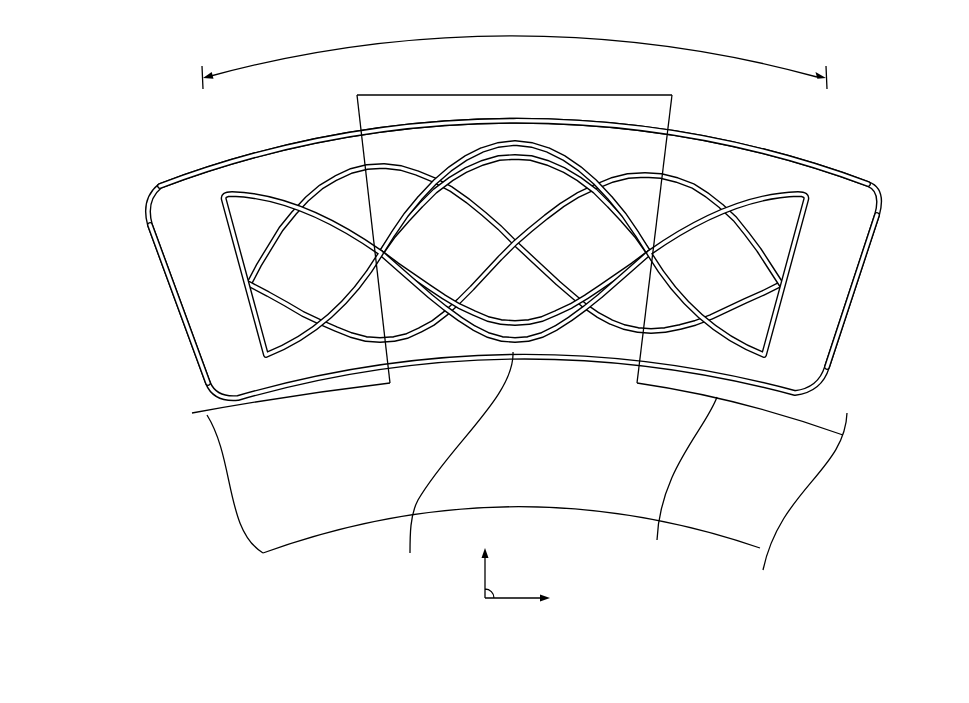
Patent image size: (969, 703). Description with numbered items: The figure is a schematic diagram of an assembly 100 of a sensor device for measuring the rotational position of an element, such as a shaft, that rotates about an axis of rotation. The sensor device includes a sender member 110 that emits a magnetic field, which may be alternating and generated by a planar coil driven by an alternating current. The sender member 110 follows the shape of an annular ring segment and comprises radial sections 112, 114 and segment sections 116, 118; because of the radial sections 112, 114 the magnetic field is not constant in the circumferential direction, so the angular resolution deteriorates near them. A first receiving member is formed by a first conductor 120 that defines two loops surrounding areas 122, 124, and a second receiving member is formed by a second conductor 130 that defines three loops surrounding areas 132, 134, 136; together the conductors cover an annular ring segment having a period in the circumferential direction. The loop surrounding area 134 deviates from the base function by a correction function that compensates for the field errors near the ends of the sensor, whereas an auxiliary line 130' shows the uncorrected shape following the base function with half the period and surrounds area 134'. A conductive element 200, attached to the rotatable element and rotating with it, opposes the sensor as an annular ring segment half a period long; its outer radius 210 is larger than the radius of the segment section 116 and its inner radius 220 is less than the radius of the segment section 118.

The assembly 100 is at (103, 118).
The sender member 110 is at (505, 245).
The radial section 112 is at (162, 242).
The radial section 114 is at (840, 338).
The segment section 116 is at (268, 151).
The segment section 118 is at (847, 413).
The first conductor 120 is at (524, 227).
The area 122 is at (387, 222).
The area 124 is at (677, 222).
The second conductor 130 is at (524, 231).
The auxiliary line 130' is at (515, 154).
The area 132 is at (273, 225).
The area 134 is at (449, 470).
The area 134' is at (515, 288).
The area 136 is at (765, 337).
The conductive element 200 is at (392, 107).
The outer radius 210 is at (437, 96).
The inner radius 220 is at (527, 485).